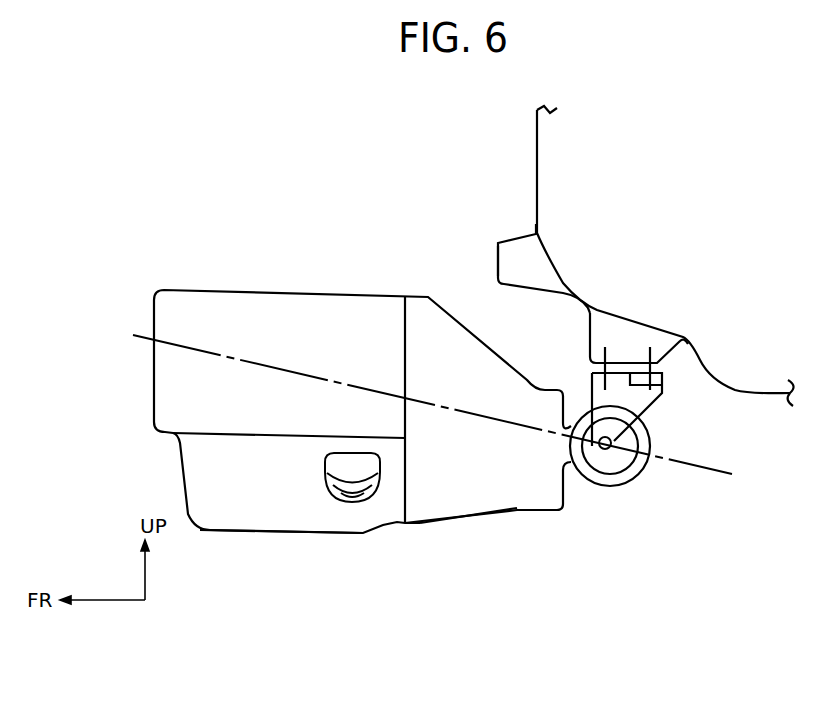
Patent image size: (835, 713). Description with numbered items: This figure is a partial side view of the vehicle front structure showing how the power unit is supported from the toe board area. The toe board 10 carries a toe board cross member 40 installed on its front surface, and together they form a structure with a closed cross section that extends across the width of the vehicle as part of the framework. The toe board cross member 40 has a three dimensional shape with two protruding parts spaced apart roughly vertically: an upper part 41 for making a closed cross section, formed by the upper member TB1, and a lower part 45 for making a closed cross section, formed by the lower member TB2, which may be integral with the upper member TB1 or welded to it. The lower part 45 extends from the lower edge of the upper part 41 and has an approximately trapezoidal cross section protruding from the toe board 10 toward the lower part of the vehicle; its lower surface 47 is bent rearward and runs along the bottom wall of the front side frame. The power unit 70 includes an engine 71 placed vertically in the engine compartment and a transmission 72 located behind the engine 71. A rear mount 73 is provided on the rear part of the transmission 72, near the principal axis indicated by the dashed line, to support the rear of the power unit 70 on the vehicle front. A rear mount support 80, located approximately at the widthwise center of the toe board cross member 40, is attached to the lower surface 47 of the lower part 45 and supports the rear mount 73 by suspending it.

The toe board 10 is at (543, 122).
The toe board cross member 40 is at (502, 243).
The upper part 41 is at (497, 260).
The lower part 45 is at (589, 337).
The lower surface 47 is at (664, 384).
The power unit 70 is at (365, 533).
The engine 71 is at (280, 520).
The transmission 72 is at (463, 508).
The rear mount 73 is at (605, 487).
The rear mount support 80 is at (622, 428).
The upper member TB1 is at (533, 264).
The lower member TB2 is at (630, 333).